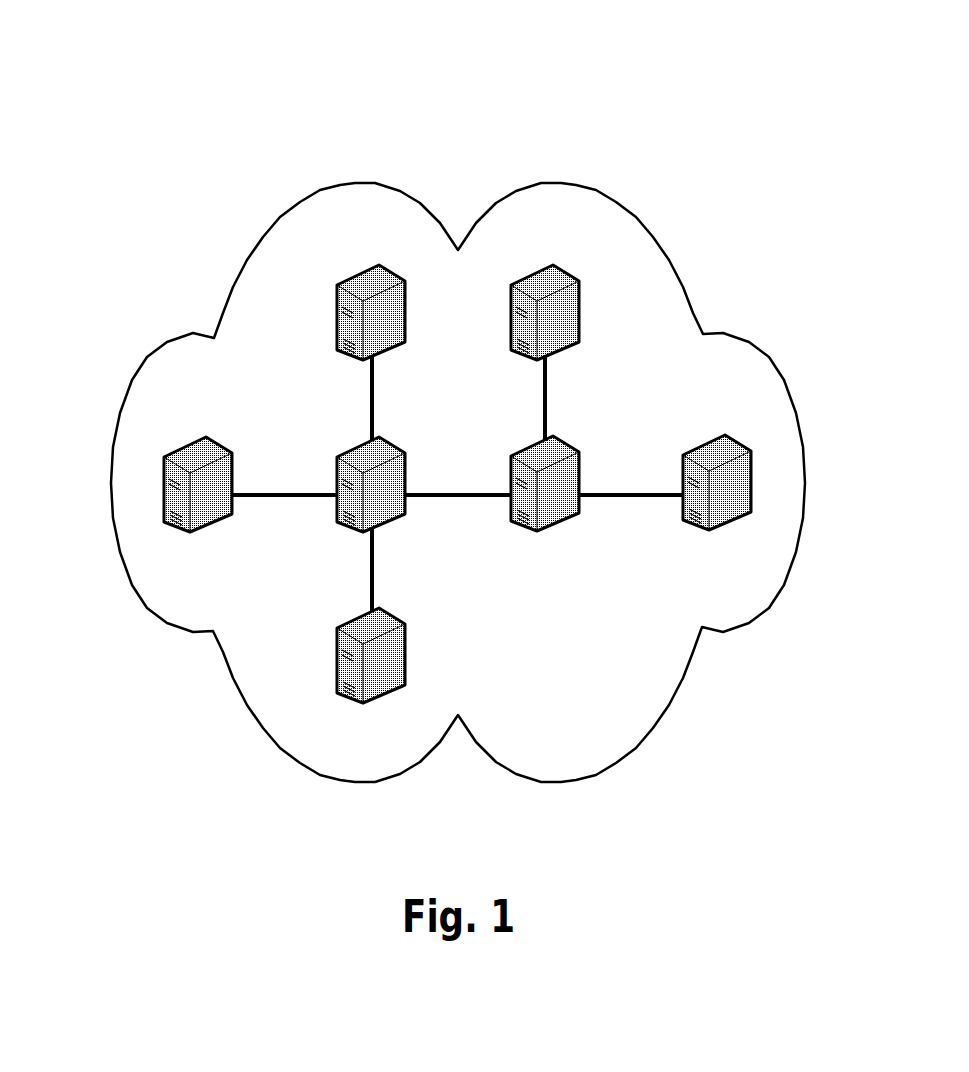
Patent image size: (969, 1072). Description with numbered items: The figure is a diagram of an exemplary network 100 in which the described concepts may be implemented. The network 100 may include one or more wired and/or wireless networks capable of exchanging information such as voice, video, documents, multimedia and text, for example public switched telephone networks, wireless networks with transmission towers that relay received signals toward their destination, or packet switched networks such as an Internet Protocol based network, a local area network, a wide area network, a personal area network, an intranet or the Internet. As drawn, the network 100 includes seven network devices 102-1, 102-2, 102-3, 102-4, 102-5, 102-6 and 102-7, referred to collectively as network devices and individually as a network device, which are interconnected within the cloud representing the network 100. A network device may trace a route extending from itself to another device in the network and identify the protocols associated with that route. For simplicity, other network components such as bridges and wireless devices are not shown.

The network 100 is at (198, 80).
The network device 102-1 is at (200, 495).
The network device 102-2 is at (380, 493).
The network device 102-3 is at (372, 290).
The network device 102-4 is at (372, 690).
The network device 102-5 is at (545, 290).
The network device 102-6 is at (545, 520).
The network device 102-7 is at (720, 495).